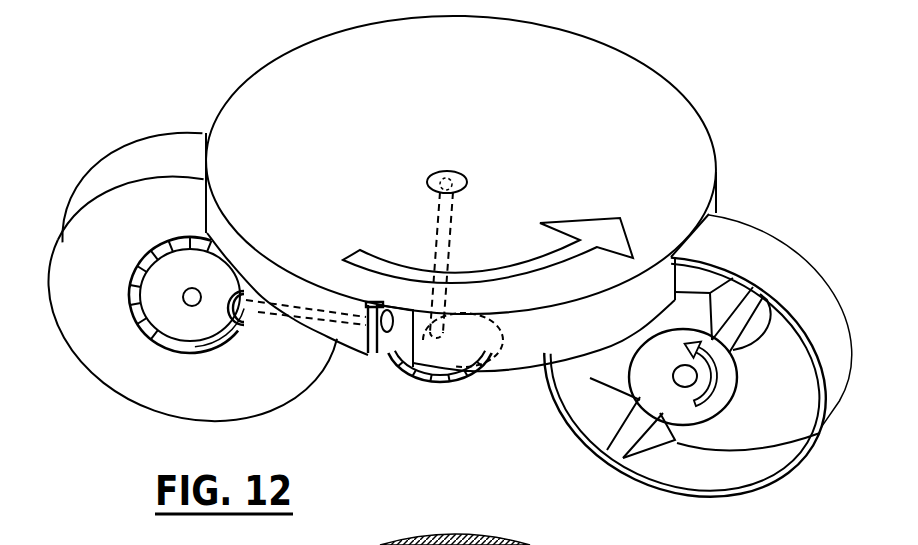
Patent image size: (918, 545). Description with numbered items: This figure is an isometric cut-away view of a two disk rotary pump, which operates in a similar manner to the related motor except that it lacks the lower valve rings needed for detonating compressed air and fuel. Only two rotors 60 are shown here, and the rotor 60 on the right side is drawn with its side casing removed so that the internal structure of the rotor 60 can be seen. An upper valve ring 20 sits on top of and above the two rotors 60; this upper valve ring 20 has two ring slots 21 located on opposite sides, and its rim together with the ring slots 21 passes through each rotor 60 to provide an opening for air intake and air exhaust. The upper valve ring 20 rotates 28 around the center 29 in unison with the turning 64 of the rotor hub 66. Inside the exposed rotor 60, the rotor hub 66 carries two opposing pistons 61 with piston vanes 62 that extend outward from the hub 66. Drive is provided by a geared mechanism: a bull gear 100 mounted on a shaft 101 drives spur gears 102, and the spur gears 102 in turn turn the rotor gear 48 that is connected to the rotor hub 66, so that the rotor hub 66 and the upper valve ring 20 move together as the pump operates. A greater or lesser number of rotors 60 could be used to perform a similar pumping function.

The upper valve ring 20 is at (688, 87).
The ring slot 21 is at (369, 357).
The rotation of the upper valve ring 28 is at (547, 253).
The center 29 is at (458, 169).
The rotor gear 48 is at (161, 243).
The rotor 60 is at (78, 163).
The piston 61 is at (750, 291).
The piston vane 62 is at (763, 317).
The turning of the rotor hub 64 is at (726, 378).
The rotor hub 66 is at (722, 422).
The bull gear 100 is at (465, 378).
The shaft 101 is at (433, 230).
The spur gear 102 is at (236, 318).